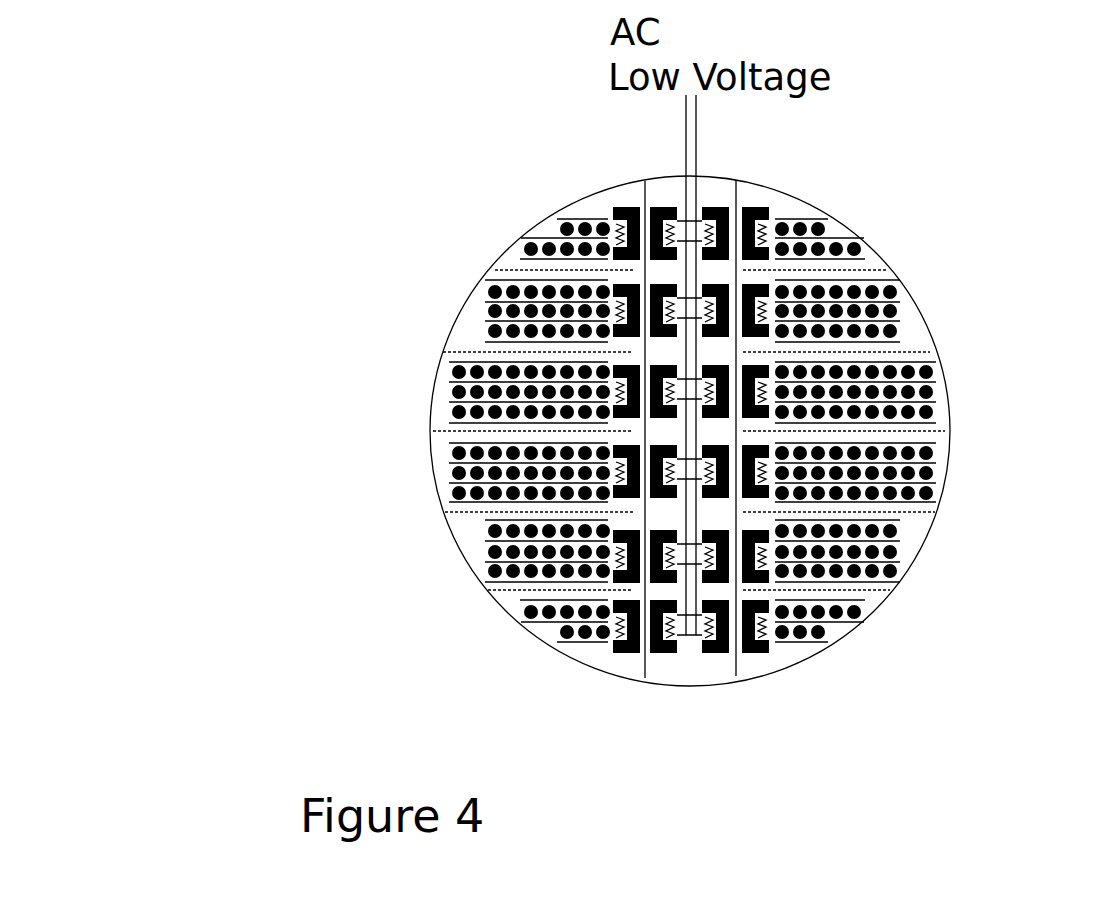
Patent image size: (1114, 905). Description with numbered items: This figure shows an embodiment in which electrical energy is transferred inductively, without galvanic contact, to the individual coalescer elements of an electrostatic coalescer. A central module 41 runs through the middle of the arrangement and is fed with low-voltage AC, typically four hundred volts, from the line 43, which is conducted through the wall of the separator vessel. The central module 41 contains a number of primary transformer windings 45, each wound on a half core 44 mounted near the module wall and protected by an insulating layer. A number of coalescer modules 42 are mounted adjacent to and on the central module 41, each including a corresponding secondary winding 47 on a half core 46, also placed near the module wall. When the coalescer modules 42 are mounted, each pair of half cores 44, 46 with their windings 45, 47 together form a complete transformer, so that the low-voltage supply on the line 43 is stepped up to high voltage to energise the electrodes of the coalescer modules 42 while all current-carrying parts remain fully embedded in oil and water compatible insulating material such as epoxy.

The central module 41 is at (692, 695).
The coalescer module 42 is at (958, 478).
The low voltage AC line 43 is at (668, 365).
The half core 44 is at (717, 198).
The primary transformer winding 45 is at (717, 237).
The half core 46 is at (742, 210).
The secondary winding 47 is at (768, 225).